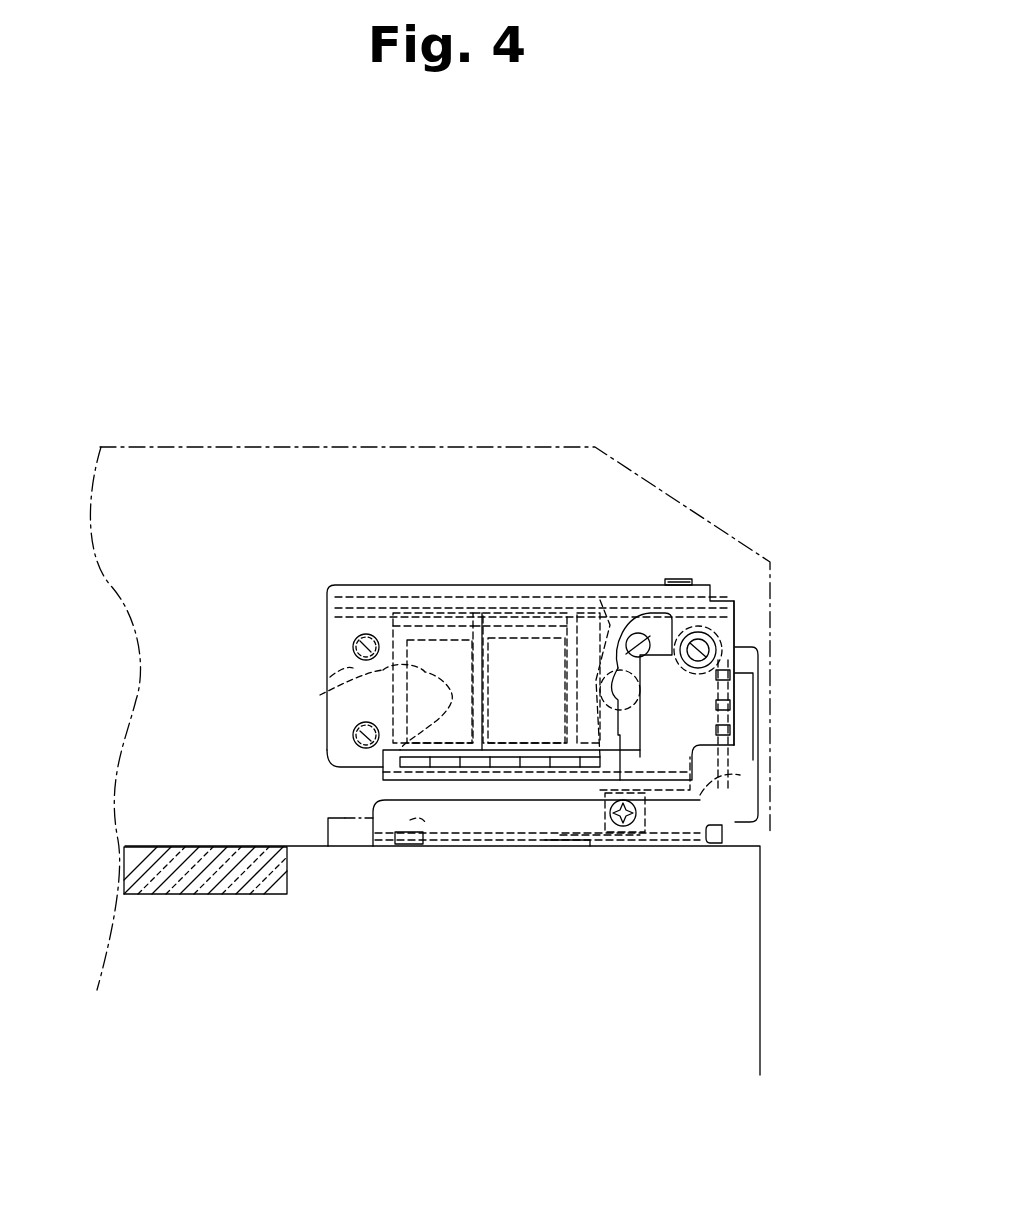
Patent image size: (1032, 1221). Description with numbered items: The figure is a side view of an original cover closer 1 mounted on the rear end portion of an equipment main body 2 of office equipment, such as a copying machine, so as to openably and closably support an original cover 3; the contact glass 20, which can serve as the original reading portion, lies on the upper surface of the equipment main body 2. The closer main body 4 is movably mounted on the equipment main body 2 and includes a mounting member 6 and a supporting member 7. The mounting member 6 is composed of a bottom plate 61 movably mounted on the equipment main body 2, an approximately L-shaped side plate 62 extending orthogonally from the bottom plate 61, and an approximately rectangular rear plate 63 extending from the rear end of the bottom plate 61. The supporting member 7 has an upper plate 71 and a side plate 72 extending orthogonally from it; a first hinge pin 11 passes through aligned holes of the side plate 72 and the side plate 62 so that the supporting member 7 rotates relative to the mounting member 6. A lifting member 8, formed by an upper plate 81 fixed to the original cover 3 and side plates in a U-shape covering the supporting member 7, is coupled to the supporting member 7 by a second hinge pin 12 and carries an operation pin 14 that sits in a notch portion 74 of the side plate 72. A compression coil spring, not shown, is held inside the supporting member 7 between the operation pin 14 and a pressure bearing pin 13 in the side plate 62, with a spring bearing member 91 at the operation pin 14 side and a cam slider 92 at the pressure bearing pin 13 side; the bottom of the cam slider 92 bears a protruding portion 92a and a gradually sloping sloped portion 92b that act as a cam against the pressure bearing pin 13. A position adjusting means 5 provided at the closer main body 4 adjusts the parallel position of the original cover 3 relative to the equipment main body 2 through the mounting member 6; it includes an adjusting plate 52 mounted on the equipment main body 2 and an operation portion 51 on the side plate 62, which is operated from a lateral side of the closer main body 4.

The original cover closer 1 is at (825, 627).
The equipment main body 2 is at (725, 1026).
The original cover 3 is at (150, 588).
The closer main body 4 is at (762, 733).
The position adjusting means 5 is at (720, 845).
The mounting member 6 is at (370, 830).
The supporting member 7 is at (738, 598).
The lifting member 8 is at (325, 583).
The first hinge pin 11 is at (705, 650).
The second hinge pin 12 is at (355, 651).
The pressure bearing pin 13 is at (605, 618).
The operation pin 14 is at (355, 735).
The contact glass 20 is at (140, 872).
The operation portion 51 is at (630, 820).
The adjusting plate 52 is at (413, 828).
The bottom plate 61 is at (650, 832).
The side plate 62 is at (568, 822).
The rear plate 63 is at (720, 800).
The upper plate 71 is at (466, 612).
The side plate 72 is at (670, 690).
The notch portion 74 is at (320, 695).
The upper plate 81 is at (356, 584).
The spring bearing member 91 is at (416, 612).
The cam slider 92 is at (520, 612).
The protruding portion 92a is at (600, 665).
The sloped portion 92b is at (597, 830).